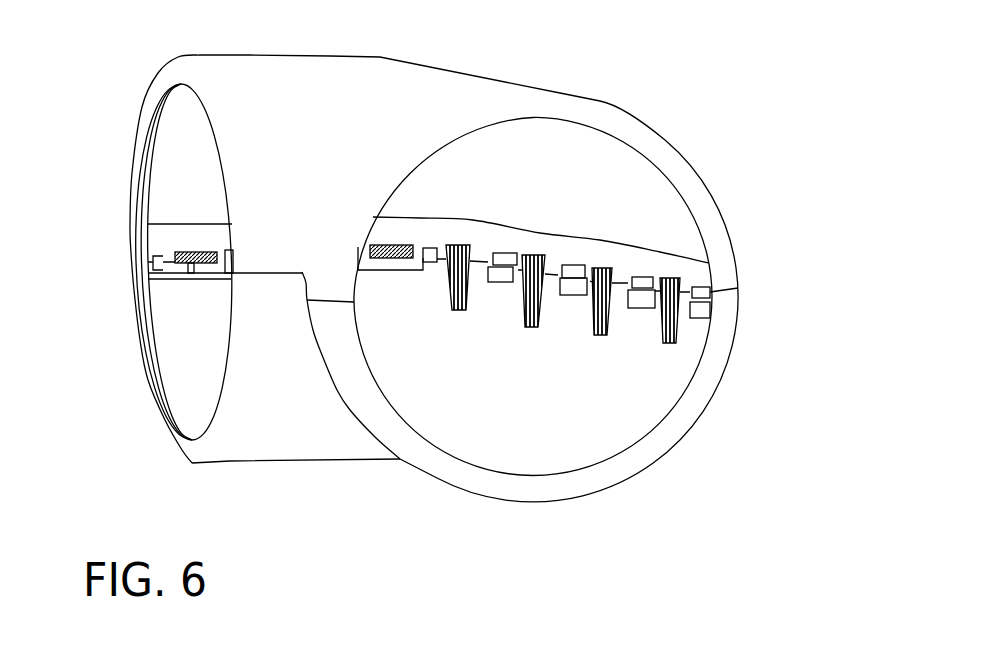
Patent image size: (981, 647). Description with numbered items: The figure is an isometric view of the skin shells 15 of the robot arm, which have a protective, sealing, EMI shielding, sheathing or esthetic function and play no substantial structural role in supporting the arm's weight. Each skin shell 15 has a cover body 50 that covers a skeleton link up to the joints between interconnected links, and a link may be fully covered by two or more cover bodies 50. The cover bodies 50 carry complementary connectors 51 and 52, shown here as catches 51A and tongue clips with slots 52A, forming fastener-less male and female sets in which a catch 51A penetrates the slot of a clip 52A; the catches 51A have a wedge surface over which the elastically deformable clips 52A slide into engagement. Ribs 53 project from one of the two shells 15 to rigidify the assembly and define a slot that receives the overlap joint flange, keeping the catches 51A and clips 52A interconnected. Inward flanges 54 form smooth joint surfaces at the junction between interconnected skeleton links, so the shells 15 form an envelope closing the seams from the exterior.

The skin shell 15 is at (762, 15).
The cover body 50 is at (357, 137).
The complementary connector 51 is at (300, 427).
The catch 51A is at (195, 273).
The complementary connector 52 is at (132, 315).
The clip with slot 52A is at (178, 276).
The rib 53 is at (596, 335).
The inward flange 54 is at (658, 152).